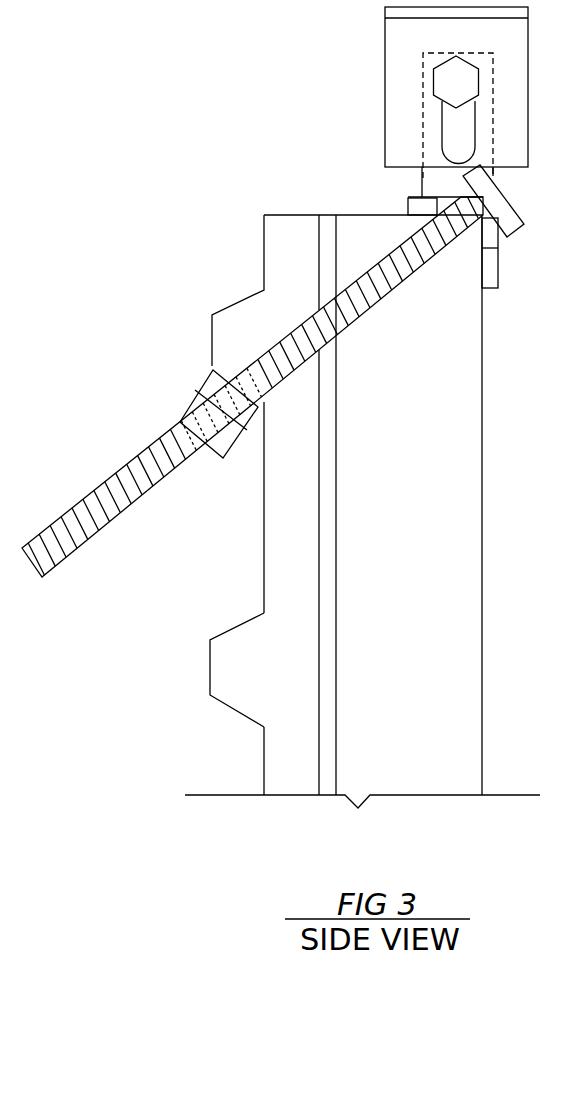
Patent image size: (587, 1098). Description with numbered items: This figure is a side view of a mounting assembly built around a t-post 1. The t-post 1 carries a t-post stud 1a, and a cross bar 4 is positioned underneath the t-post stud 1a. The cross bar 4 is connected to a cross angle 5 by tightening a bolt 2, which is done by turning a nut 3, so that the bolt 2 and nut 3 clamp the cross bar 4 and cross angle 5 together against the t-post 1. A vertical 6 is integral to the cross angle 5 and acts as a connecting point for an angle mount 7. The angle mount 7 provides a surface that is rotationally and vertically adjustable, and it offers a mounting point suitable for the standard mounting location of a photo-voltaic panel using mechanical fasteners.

The t-post 1 is at (263, 770).
The t-post stud 1a is at (209, 668).
The bolt 2 is at (99, 483).
The nut 3 is at (181, 397).
The cross bar 4 is at (196, 380).
The cross angle 5 is at (407, 204).
The vertical 6 is at (420, 176).
The angle mount 7 is at (383, 12).